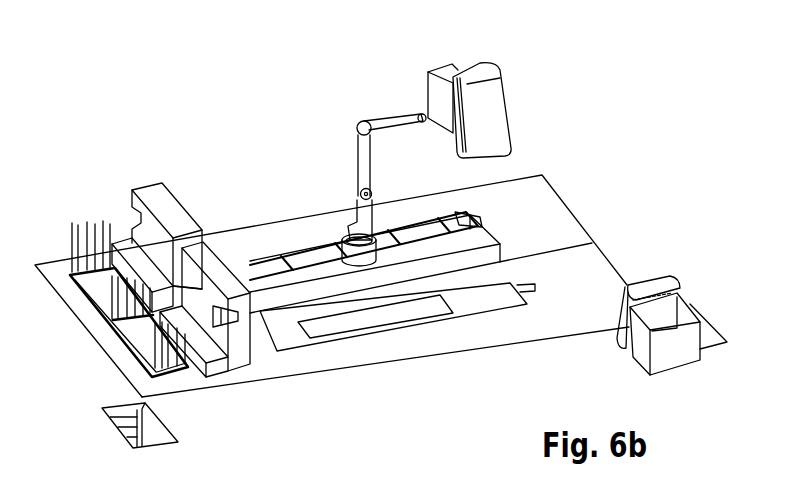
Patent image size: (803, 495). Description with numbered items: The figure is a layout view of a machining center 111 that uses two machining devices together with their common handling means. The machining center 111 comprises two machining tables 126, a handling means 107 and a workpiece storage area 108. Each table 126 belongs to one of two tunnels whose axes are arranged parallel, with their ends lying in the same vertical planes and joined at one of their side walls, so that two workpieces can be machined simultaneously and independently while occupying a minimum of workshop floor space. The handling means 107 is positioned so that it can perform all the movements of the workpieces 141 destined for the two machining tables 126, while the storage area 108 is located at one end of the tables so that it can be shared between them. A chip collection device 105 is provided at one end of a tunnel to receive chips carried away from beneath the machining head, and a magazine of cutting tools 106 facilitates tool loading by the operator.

The chip collection device 105 is at (443, 72).
The magazine of cutting tools 106 is at (212, 253).
The handling means 107 is at (352, 153).
The workpiece storage area 108 is at (100, 290).
The machining center 111 is at (172, 124).
The machining tables 126 is at (285, 250).
The workpieces 141 is at (370, 318).